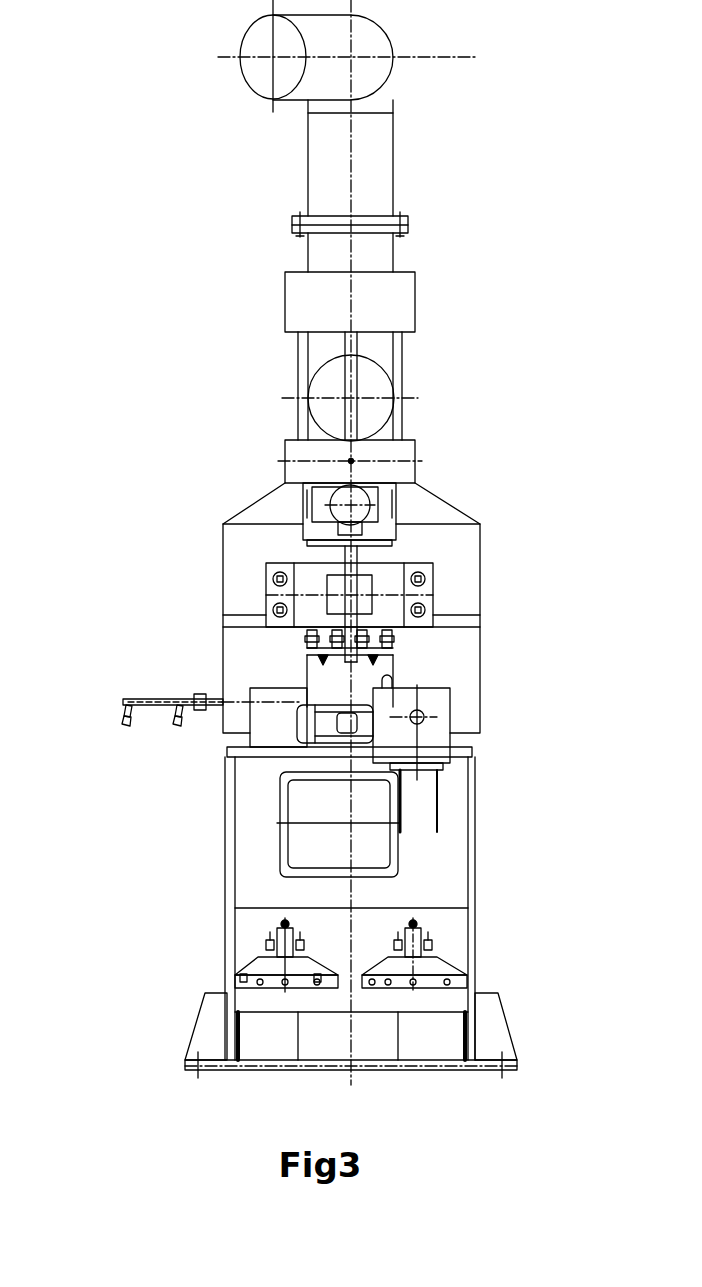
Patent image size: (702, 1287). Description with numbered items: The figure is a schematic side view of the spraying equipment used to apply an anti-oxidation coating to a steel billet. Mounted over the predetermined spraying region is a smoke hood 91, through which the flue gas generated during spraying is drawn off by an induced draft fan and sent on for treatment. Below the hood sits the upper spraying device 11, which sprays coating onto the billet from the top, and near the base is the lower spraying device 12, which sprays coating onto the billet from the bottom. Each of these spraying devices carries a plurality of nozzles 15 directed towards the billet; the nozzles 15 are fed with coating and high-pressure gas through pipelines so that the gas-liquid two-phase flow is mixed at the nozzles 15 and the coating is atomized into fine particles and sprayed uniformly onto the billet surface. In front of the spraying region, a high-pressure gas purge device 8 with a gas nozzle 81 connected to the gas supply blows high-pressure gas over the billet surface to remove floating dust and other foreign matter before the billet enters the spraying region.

The smoke hood 91 is at (280, 510).
The upper spraying device 11 is at (317, 650).
The nozzles 15 is at (323, 660).
The high-pressure gas purge device 8 is at (155, 699).
The gas nozzle 81 is at (124, 716).
The lower spraying device 12 is at (277, 935).